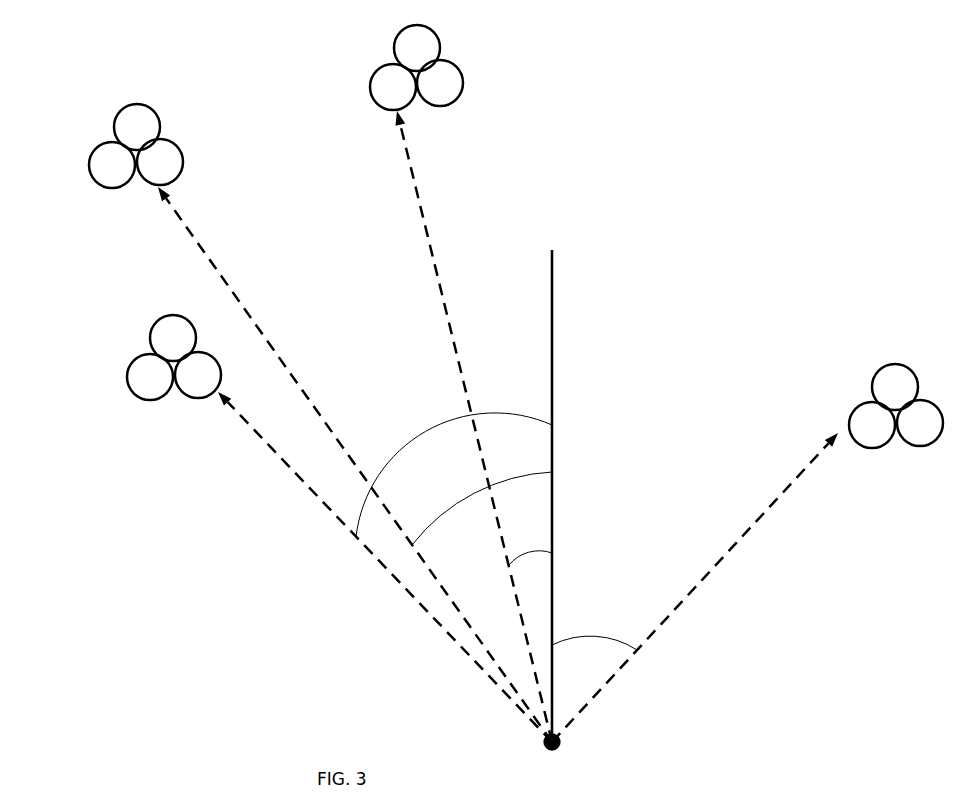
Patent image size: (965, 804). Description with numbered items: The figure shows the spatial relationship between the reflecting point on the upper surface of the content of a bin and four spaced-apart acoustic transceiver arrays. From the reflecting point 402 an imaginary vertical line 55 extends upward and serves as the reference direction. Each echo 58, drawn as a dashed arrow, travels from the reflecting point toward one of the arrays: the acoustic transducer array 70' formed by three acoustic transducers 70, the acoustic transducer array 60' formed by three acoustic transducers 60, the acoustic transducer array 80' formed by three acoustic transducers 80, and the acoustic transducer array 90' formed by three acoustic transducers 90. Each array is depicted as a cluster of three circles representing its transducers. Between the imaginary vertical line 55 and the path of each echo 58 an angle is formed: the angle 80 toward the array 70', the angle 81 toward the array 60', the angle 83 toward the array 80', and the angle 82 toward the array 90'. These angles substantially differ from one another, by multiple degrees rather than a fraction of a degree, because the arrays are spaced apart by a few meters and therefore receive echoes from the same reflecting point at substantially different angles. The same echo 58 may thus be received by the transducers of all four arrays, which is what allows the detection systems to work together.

The imaginary vertical line 55 is at (552, 485).
The echo 58 is at (230, 282).
The acoustic transducer 60 is at (416, 67).
The acoustic transducer array 60' is at (474, 63).
The acoustic transducer 70 is at (896, 406).
The acoustic transducer array 70' is at (864, 372).
The acoustic transducer 80 is at (363, 377).
The acoustic transducer array 80' is at (342, 353).
The acoustic transducer 90 is at (174, 357).
The acoustic transducer array 90' is at (144, 342).
The angle 81 is at (530, 544).
The angle 82 is at (454, 475).
The angle 83 is at (482, 508).
The reference point 402 is at (560, 746).